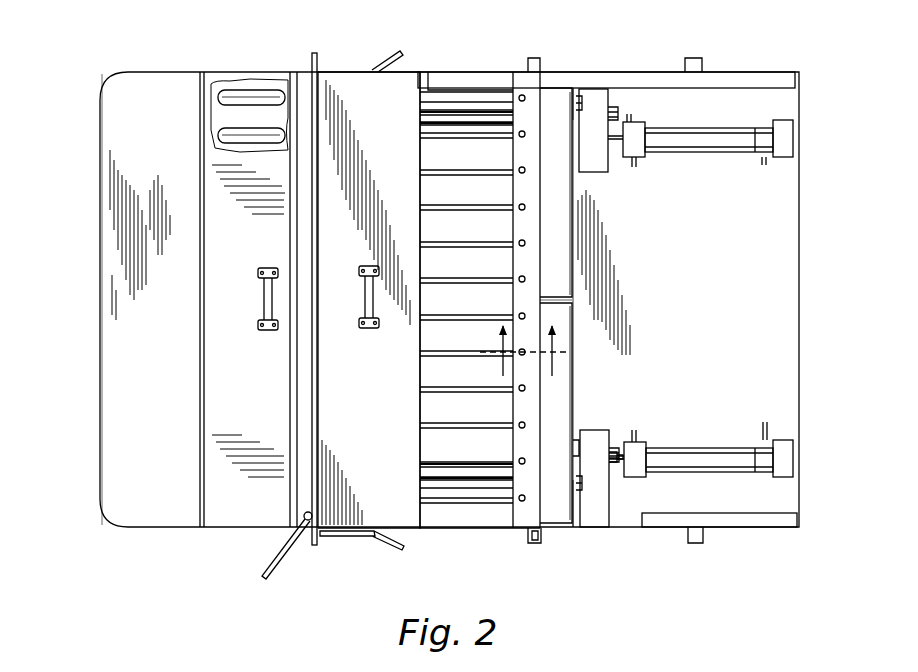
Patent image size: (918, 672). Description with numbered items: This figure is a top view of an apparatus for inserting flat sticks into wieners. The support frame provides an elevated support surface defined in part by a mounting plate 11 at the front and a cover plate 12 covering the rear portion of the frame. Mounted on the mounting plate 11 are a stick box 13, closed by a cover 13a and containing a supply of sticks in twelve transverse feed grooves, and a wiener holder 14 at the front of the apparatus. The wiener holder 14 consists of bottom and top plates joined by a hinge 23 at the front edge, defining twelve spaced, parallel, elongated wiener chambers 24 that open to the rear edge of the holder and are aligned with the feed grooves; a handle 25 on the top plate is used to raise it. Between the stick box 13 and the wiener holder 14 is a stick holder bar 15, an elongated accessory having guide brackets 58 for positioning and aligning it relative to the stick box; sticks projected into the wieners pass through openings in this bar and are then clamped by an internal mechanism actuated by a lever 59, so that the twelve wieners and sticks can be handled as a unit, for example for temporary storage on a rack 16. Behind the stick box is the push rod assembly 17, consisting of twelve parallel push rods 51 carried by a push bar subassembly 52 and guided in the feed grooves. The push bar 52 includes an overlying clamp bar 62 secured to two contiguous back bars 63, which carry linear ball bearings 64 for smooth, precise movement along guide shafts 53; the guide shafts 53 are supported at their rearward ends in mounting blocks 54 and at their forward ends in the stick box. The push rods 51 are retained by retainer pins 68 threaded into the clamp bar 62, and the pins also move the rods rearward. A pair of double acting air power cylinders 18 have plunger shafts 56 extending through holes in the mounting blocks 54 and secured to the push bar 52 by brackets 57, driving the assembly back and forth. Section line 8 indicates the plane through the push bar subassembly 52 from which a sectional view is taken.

The section line 8- 8 is at (525, 353).
The mounting plate 11 is at (112, 301).
The cover plate 12 is at (786, 266).
The stick box 13 is at (378, 206).
The cover 13a is at (402, 522).
The wiener holder 14 is at (260, 386).
The stick holder bar 15 is at (304, 70).
The rack 16 is at (625, 72).
The push rod assembly 17 is at (578, 306).
The power cylinders 18 is at (731, 154).
The hinge 23 is at (200, 271).
The wiener chambers 24 is at (220, 135).
The handle 25 is at (262, 290).
The push rods 51 is at (490, 170).
The push bar subassembly 52 is at (582, 190).
The guide shafts 53 is at (612, 113).
The mounting blocks 54 is at (598, 168).
The plunger shafts 56 is at (618, 448).
The brackets 57 is at (582, 445).
The guide brackets 58 is at (380, 58).
The lever 59 is at (280, 570).
The clamp bar 62 is at (520, 221).
The back bars 63 is at (558, 243).
The linear ball bearings 64 is at (578, 108).
The retainer pins 68 is at (519, 173).